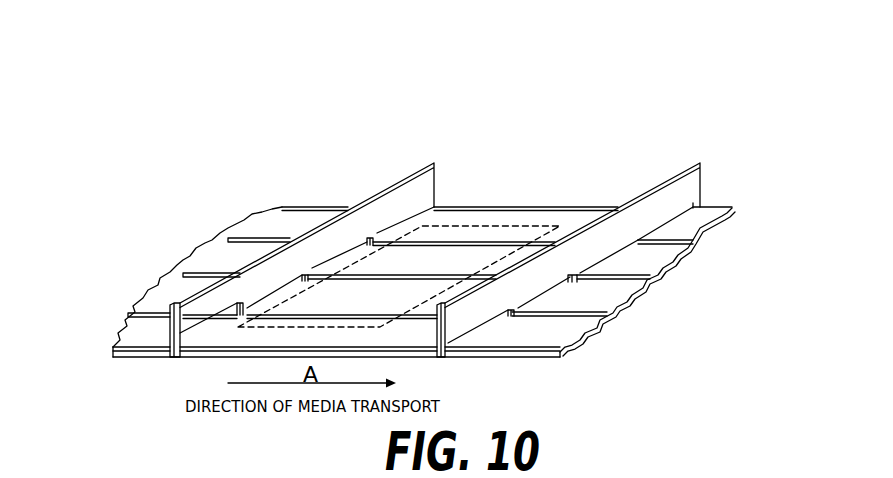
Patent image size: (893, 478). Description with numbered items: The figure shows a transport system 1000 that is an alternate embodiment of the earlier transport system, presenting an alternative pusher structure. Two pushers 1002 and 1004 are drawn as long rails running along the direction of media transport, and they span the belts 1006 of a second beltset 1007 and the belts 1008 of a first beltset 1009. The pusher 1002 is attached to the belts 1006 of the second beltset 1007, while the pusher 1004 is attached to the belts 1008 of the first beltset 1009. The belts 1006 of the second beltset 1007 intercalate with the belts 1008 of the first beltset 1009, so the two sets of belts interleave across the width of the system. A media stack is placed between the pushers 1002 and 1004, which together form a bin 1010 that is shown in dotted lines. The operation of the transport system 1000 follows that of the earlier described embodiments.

The transport system 1000 is at (531, 108).
The pusher 1002 is at (433, 162).
The pusher 1004 is at (700, 162).
The belts 1006 is at (218, 250).
The second beltset 1007 is at (194, 208).
The belts 1008 is at (622, 300).
The first beltset 1009 is at (623, 336).
The bin 1010 is at (495, 226).